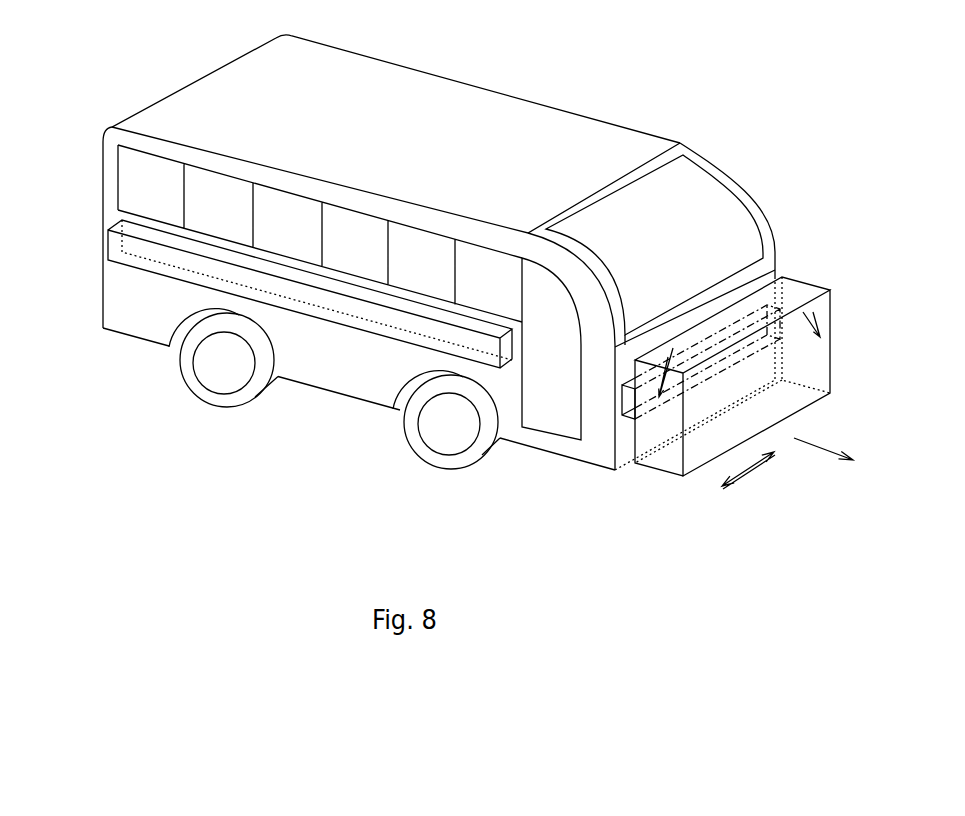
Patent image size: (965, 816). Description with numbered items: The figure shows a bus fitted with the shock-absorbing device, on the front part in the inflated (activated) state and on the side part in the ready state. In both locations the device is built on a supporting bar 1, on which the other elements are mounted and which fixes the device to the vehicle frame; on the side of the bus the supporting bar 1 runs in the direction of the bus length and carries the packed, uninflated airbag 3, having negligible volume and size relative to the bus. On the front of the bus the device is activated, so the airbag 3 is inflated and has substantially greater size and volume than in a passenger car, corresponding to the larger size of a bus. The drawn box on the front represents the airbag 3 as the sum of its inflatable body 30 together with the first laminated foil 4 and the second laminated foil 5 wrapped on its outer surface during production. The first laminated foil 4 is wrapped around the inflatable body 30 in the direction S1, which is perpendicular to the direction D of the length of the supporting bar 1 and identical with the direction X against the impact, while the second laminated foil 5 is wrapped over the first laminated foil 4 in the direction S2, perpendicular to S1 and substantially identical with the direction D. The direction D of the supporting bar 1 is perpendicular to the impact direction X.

The supporting bar 1 is at (151, 264).
The airbag 3 is at (732, 437).
The inflatable body 30 is at (732, 376).
The first laminated foil 4 is at (806, 335).
The second laminated foil 5 is at (708, 421).
The direction of wrapping of the first laminated foil S1 is at (794, 303).
The direction of wrapping of the second laminated foil S2 is at (669, 358).
The direction against the impact X is at (828, 443).
The direction of the length of the supporting bar D is at (748, 480).